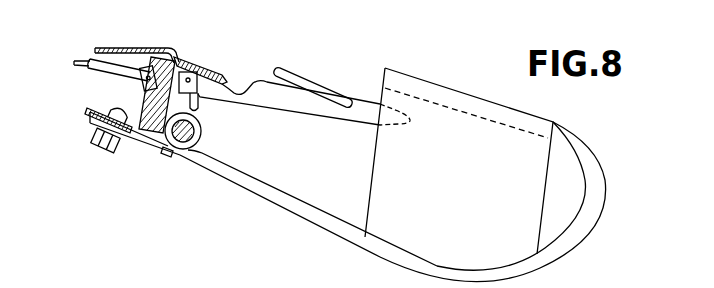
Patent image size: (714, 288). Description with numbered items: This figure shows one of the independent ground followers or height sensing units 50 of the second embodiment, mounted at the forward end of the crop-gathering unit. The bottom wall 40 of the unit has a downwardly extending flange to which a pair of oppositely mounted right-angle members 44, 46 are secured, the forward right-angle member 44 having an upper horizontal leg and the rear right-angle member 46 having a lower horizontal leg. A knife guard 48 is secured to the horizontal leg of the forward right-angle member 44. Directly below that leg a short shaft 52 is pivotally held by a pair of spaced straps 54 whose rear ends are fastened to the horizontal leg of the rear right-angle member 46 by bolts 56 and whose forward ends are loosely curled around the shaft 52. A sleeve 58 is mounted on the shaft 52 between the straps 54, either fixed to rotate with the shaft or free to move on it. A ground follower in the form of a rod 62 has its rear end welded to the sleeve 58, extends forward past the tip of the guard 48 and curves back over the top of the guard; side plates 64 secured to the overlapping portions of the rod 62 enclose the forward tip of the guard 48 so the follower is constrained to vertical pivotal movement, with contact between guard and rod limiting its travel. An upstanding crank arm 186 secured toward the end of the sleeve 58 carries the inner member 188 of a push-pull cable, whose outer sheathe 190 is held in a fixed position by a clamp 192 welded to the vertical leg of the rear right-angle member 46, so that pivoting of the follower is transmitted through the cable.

The bottom wall 40 is at (110, 47).
The outer sheathe 190 is at (92, 56).
The clamp 192 is at (152, 66).
The rear right-angle member 46 is at (143, 88).
The inner member of push-pull cable 188 is at (191, 71).
The crank arm 186 is at (197, 108).
The forward right-angle member 44 is at (215, 74).
The knife guard 48 is at (343, 124).
The height sensing unit 50 is at (440, 85).
The rod 62 is at (580, 232).
The side plate 64 is at (377, 169).
The strap 54 is at (142, 142).
The bolt 56 is at (97, 108).
The sleeve 58 is at (184, 150).
The shaft 52 is at (166, 155).